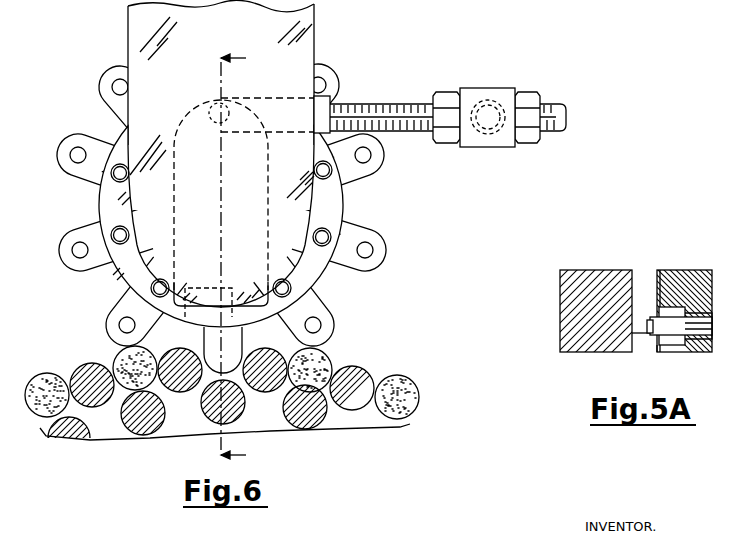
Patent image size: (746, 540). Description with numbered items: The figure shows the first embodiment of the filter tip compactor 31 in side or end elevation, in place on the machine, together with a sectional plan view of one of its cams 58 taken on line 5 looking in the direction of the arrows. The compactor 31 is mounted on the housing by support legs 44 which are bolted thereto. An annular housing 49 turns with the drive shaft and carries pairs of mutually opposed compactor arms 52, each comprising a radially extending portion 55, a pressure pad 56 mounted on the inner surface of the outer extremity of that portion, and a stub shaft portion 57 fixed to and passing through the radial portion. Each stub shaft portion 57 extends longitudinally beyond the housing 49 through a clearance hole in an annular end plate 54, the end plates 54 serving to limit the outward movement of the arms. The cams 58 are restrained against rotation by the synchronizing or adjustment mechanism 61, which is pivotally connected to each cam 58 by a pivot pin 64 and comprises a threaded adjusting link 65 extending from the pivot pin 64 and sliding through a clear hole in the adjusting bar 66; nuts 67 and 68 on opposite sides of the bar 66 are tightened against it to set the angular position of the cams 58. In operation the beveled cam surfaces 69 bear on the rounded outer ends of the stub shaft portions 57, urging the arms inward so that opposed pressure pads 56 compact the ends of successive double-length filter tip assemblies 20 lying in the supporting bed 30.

In FIG. 6, the section line 5- 5 is at (240, 257).
In FIG. 6, the double-length filter tip assembly 20 is at (247, 348).
In FIG. 6, the ball bed 30 is at (191, 424).
In FIG. 6, the filter tip compactor 31 is at (416, 50).
In FIG. 6, the support legs 44 is at (314, 46).
In FIG. 5A, the annular housing 49 is at (699, 272).
In FIG. 6, the compactor arms 52 is at (426, 222).
In FIG. 5A, the annular end plates 54 is at (661, 352).
In FIG. 6, the radially extending portion 55 is at (340, 268).
In FIG. 5A, the radially extending portion 55 is at (672, 276).
In FIG. 6, the pressure pad 56 is at (372, 251).
In FIG. 6, the stub shaft portion 57 is at (328, 236).
In FIG. 5A, the stub shaft portion 57 is at (707, 352).
In FIG. 6, the cams 58 is at (266, 168).
In FIG. 5A, the cams 58 is at (564, 310).
In FIG. 6, the synchronizing or adjustment mechanism 61 is at (533, 56).
In FIG. 6, the pivot pin 64 is at (214, 106).
In FIG. 6, the threaded adjusting link 65 is at (389, 104).
In FIG. 6, the adjusting bar 66 is at (488, 95).
In FIG. 6, the nut 67 is at (436, 143).
In FIG. 6, the nut 68 is at (529, 143).
In FIG. 5A, the cam surfaces 69 is at (651, 318).